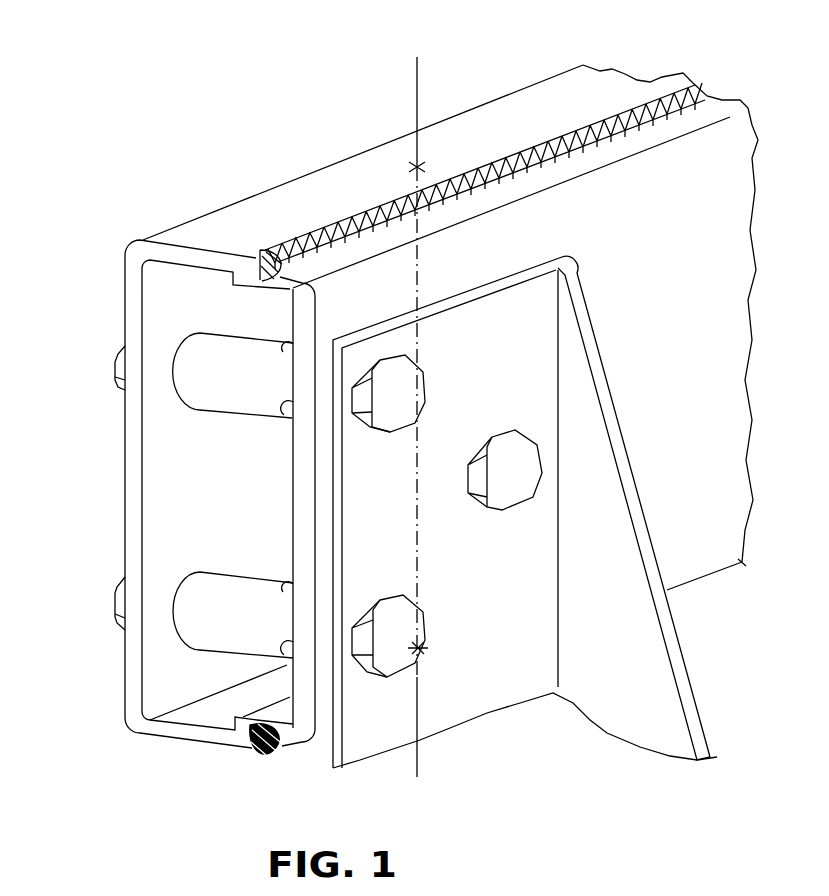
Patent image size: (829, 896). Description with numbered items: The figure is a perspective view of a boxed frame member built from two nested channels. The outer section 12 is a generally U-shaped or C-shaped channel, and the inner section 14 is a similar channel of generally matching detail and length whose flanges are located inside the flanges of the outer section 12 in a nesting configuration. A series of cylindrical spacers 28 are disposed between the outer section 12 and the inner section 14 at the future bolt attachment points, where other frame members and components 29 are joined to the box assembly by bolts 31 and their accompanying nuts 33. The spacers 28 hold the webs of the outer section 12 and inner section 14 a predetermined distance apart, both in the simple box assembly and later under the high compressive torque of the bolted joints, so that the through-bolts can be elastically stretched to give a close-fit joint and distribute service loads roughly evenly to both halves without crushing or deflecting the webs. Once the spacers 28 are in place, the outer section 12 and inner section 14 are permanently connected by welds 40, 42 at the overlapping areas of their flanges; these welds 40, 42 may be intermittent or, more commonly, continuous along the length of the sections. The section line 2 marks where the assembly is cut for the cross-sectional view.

The section line 2- 2 is at (417, 57).
The channel member 12 is at (122, 497).
The closure strip 14 is at (287, 487).
The bosses 28 is at (208, 568).
The support plate 29 is at (638, 737).
The bolts 31 is at (462, 442).
The tabs 33 is at (95, 593).
The weld 40 is at (275, 758).
The weld 42 is at (272, 243).